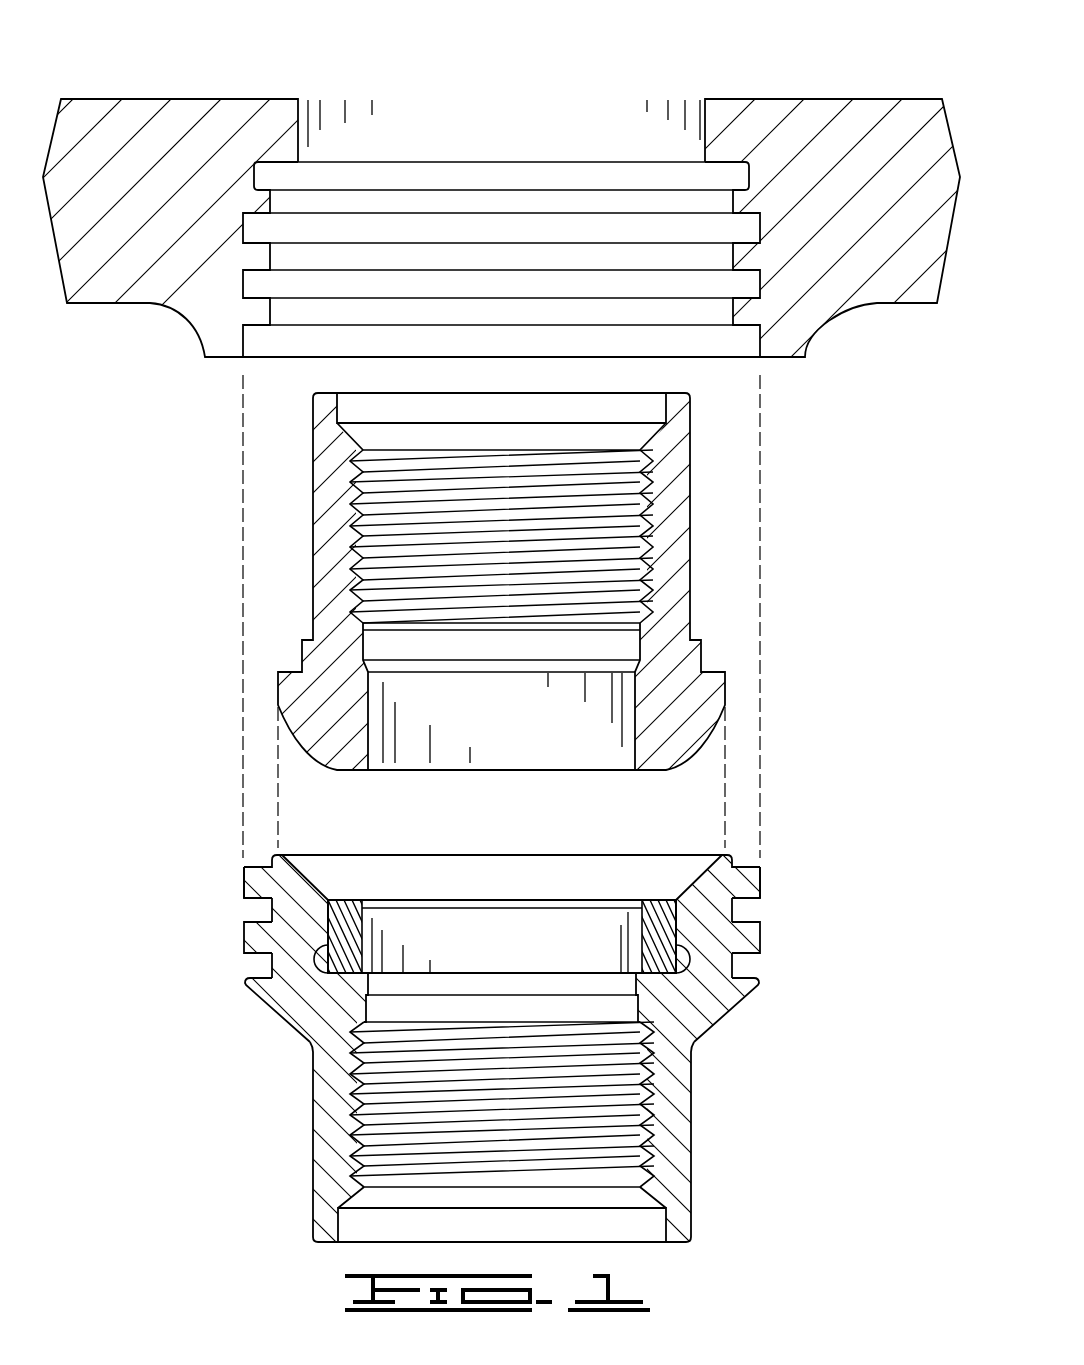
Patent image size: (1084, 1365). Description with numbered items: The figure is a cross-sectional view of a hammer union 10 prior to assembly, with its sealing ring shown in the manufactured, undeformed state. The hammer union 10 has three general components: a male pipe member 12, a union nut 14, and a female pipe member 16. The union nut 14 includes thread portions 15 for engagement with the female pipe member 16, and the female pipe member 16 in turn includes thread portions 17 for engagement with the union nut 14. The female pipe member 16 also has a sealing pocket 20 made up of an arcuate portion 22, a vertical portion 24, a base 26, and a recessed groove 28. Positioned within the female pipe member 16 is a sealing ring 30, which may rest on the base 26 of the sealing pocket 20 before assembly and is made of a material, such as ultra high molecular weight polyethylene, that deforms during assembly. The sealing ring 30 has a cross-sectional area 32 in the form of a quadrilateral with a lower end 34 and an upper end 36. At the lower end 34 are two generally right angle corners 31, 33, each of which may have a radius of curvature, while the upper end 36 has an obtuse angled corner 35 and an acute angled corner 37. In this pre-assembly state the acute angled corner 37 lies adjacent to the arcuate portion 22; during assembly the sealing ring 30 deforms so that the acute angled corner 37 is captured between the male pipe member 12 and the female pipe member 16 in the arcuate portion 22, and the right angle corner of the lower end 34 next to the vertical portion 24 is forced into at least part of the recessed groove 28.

The hammer union 10 is at (176, 68).
The male pipe member 12 is at (690, 497).
The union nut 14 is at (793, 98).
The thread portions 15 is at (247, 280).
The female pipe member 16 is at (692, 1148).
The thread portions 17 is at (248, 942).
The sealing pocket 20 is at (520, 925).
The arcuate portion 22 is at (708, 868).
The vertical portion 24 is at (680, 917).
The base 26 is at (470, 973).
The recessed groove 28 is at (685, 962).
The sealing ring 30 is at (322, 925).
The right angle corner 31 is at (323, 952).
The cross-sectional area 32 is at (494, 910).
The right angle corner 33 is at (302, 1038).
The lower end 34 is at (347, 985).
The obtuse angled corner 35 is at (365, 899).
The upper end 36 is at (347, 899).
The acute angled corner 37 is at (327, 903).